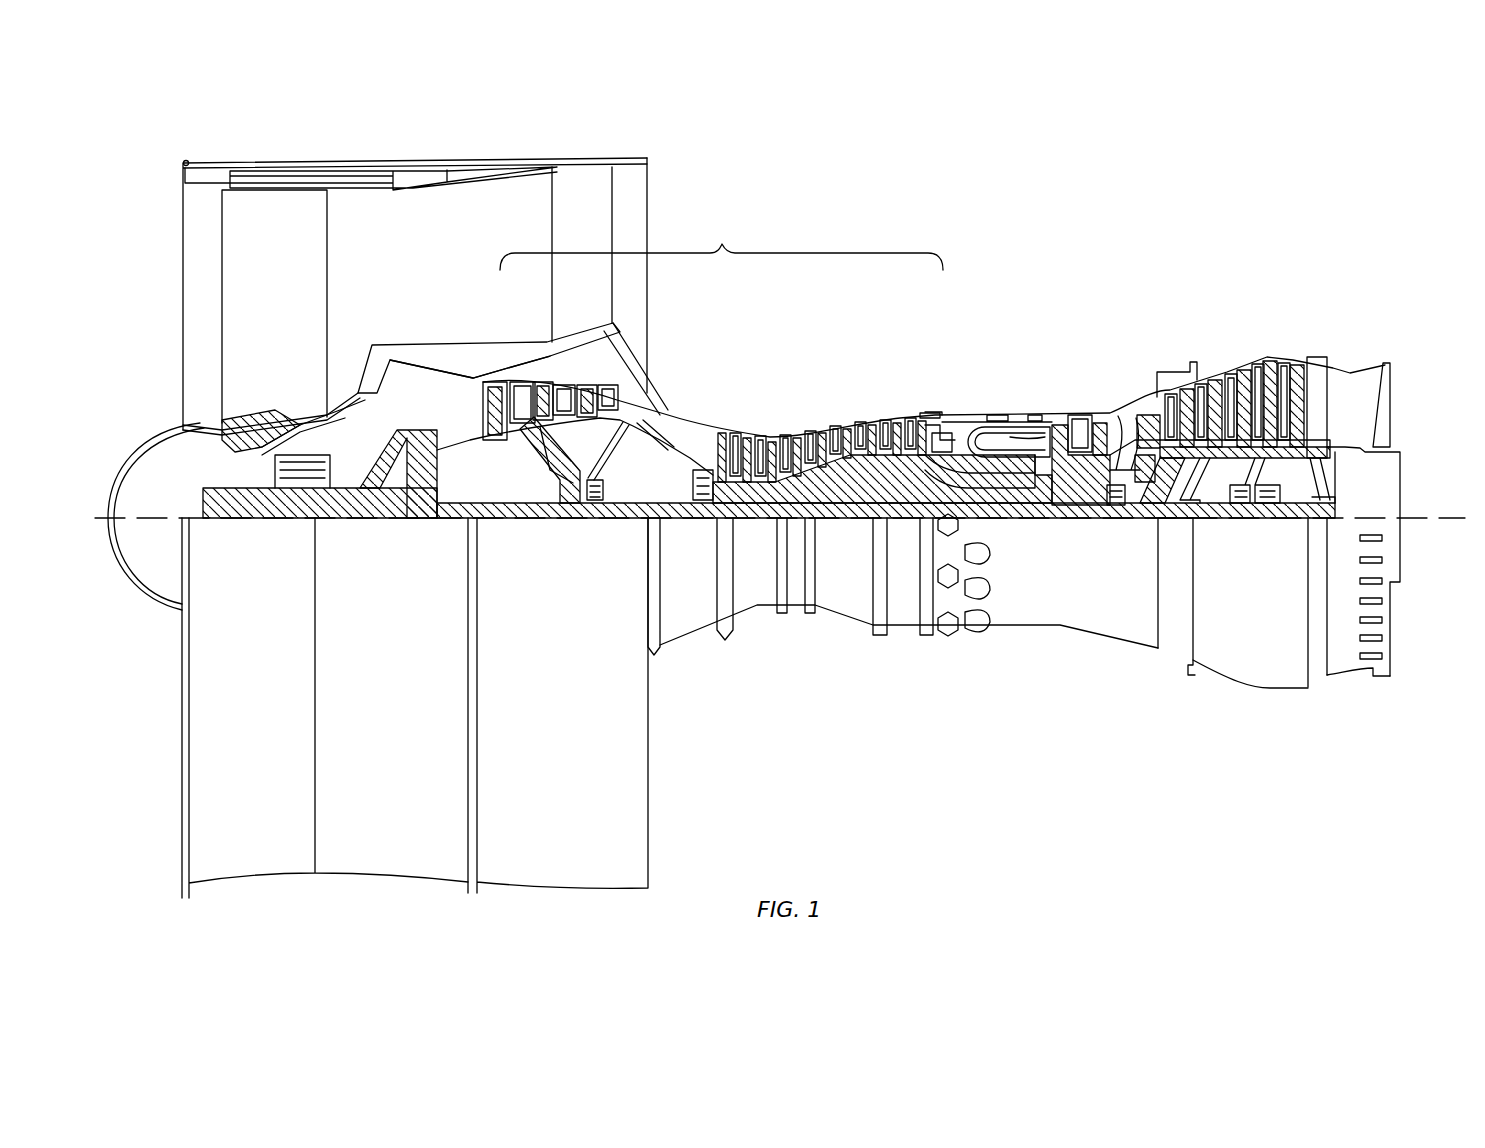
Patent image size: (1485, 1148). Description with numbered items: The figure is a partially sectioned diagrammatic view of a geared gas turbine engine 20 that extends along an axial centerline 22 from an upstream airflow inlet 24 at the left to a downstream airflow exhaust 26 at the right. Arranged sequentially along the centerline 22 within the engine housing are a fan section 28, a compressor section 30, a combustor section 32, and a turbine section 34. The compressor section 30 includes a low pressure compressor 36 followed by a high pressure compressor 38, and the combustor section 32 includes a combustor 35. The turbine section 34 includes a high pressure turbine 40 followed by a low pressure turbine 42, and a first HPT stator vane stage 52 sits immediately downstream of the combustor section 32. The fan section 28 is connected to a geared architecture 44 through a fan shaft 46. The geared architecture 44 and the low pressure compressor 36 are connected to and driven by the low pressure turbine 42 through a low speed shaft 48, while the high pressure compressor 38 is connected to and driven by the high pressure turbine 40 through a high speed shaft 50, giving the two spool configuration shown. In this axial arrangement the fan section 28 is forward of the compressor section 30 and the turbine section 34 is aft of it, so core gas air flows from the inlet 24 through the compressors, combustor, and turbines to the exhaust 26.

The gas turbine engine 20 is at (1030, 180).
The axial centerline 22 is at (1455, 522).
The upstream airflow inlet 24 is at (160, 290).
The downstream airflow exhaust 26 is at (1405, 396).
The fan section 28 is at (390, 140).
The compressor section 30 is at (721, 241).
The combustor section 32 is at (1033, 410).
The turbine section 34 is at (1335, 236).
The combustor 35 is at (993, 442).
The low pressure compressor 36 is at (603, 375).
The high pressure compressor 38 is at (823, 412).
The high pressure turbine 40 is at (1078, 407).
The low pressure turbine 42 is at (1256, 345).
The geared architecture 44 is at (413, 520).
The fan shaft 46 is at (258, 520).
The low speed shaft 48 is at (1085, 520).
The high speed shaft 50 is at (855, 520).
The first HPT stator vane stage 52 is at (1122, 425).